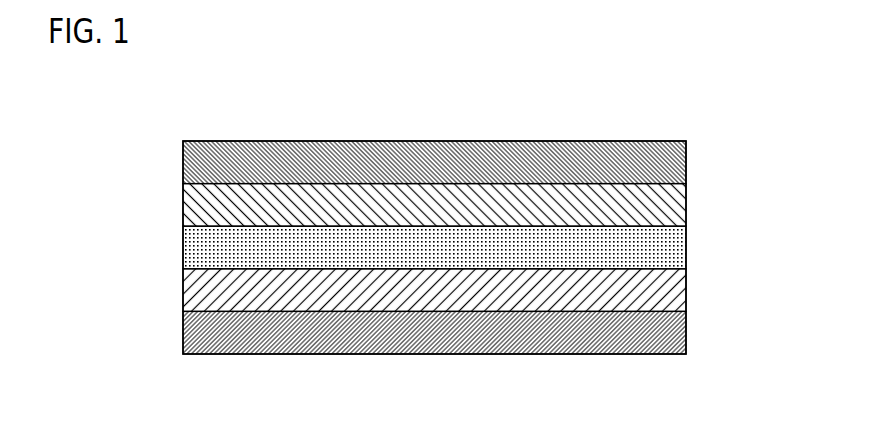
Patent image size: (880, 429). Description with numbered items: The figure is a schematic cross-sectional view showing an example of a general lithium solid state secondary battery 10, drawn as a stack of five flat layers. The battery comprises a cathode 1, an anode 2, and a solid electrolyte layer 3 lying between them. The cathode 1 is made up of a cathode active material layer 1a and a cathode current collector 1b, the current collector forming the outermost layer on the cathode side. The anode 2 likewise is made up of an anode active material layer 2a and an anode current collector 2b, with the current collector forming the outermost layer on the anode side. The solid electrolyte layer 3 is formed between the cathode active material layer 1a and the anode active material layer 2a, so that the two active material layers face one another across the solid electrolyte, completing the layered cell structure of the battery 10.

The lithium solid state secondary battery 10 is at (501, 179).
The anode 2 is at (501, 183).
The anode current collector 2b is at (658, 170).
The anode active material layer 2a is at (658, 213).
The solid electrolyte layer 3 is at (658, 254).
The cathode 1 is at (501, 311).
The cathode active material layer 1a is at (660, 294).
The cathode current collector 1b is at (660, 338).